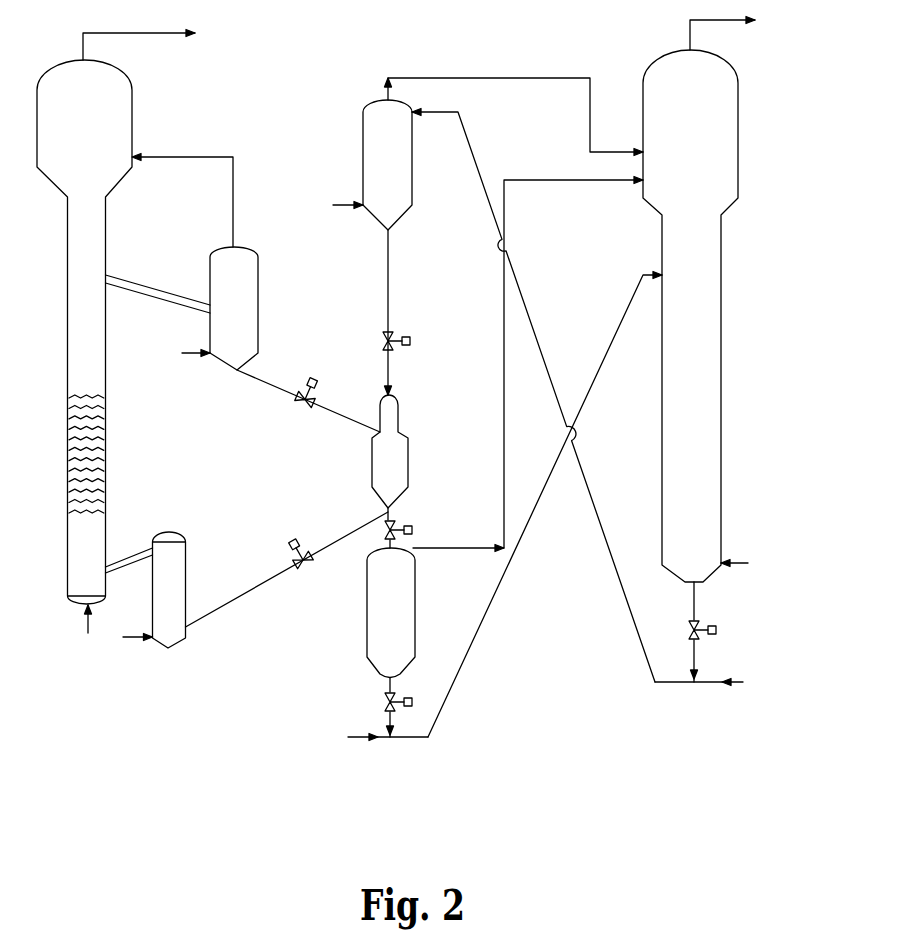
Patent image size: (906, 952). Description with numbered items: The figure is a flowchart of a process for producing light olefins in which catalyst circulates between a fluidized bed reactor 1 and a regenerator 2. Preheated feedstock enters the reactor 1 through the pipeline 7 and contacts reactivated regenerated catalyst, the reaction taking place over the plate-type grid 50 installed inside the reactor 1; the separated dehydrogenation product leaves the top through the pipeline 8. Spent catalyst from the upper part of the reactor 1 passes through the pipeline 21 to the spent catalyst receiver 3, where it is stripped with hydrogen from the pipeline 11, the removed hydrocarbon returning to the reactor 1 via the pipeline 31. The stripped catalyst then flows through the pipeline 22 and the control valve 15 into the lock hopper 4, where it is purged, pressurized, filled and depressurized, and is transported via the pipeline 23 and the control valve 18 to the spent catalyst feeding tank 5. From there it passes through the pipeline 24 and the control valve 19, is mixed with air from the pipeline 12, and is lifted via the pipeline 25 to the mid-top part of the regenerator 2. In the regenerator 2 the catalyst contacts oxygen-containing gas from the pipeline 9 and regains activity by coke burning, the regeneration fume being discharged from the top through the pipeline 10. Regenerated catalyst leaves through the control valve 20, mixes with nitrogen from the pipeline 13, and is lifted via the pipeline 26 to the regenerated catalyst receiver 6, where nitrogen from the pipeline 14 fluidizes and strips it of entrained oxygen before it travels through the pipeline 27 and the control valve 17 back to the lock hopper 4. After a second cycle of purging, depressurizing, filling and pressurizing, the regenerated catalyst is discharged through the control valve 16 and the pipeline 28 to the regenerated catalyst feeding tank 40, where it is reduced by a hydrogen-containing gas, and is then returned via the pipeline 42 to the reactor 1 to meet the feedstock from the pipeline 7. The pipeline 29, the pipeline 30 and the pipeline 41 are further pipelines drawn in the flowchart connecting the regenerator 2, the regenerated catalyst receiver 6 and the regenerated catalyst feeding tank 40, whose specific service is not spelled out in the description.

The reactor 1 is at (132, 130).
The regenerator 2 is at (738, 120).
The spent catalyst receiver 3 is at (248, 250).
The lock hopper 4 is at (410, 467).
The spent catalyst feeding tank 5 is at (415, 608).
The regenerated catalyst receiver 6 is at (410, 205).
The pipeline 7 is at (81, 621).
The pipeline 8 is at (139, 38).
The pipeline 9 is at (736, 554).
The pipeline 10 is at (722, 25).
The pipeline 11 is at (194, 346).
The pipeline 12 is at (387, 729).
The pipeline 13 is at (700, 673).
The pipeline 14 is at (347, 198).
The control valve 15 is at (314, 385).
The control valve 16 is at (301, 543).
The control valve 17 is at (409, 341).
The control valve 18 is at (413, 530).
The control valve 19 is at (411, 698).
The control valve 20 is at (714, 632).
The pipeline 21 is at (158, 289).
The pipeline 22 is at (308, 401).
The pipeline 23 is at (392, 515).
The pipeline 24 is at (392, 687).
The pipeline 25 is at (545, 505).
The pipeline 26 is at (533, 396).
The pipeline 27 is at (398, 312).
The pipeline 28 is at (287, 569).
The pipeline 29 is at (528, 357).
The pipeline 30 is at (514, 107).
The pipeline 31 is at (182, 193).
The regenerated catalyst feeding tank 40 is at (187, 552).
The pipeline 41 is at (137, 630).
The pipeline 42 is at (129, 554).
The plate-type grid 50 is at (86, 448).